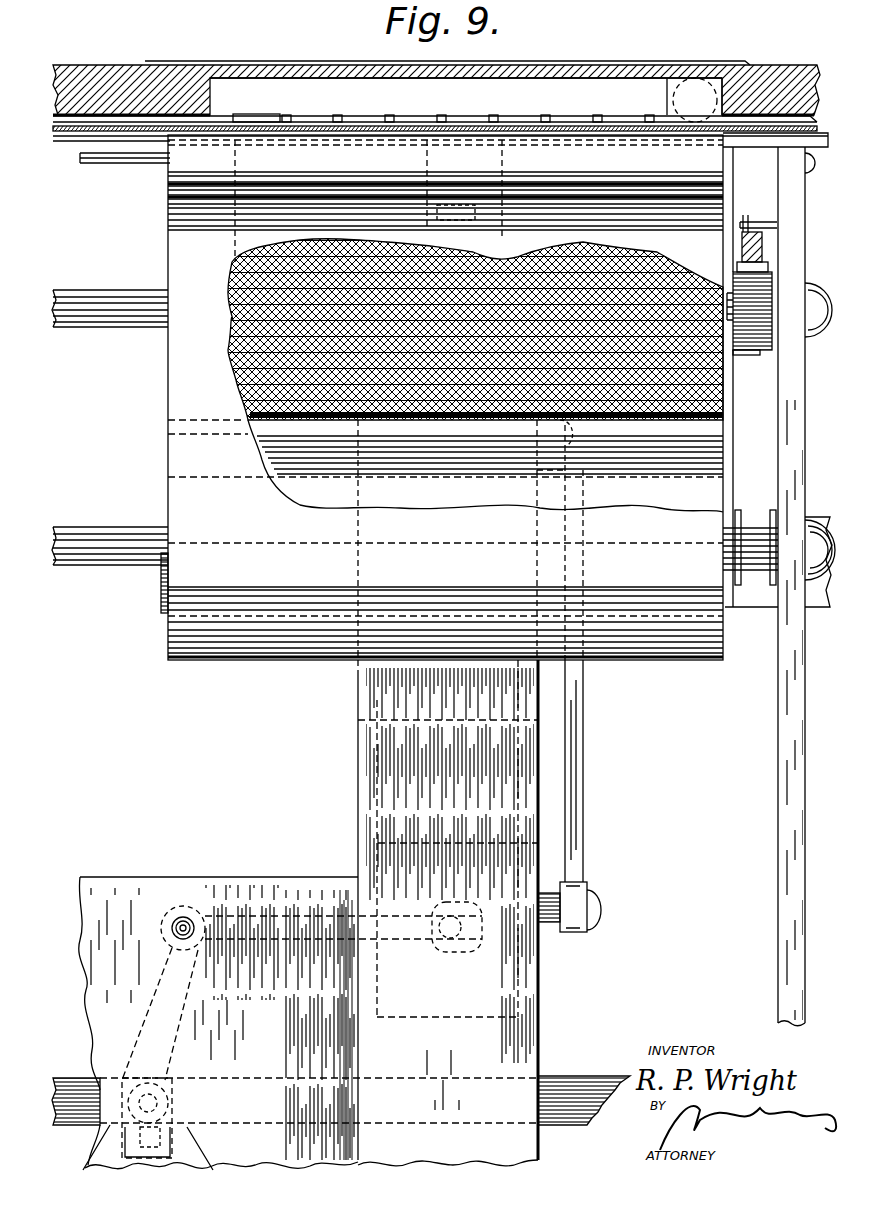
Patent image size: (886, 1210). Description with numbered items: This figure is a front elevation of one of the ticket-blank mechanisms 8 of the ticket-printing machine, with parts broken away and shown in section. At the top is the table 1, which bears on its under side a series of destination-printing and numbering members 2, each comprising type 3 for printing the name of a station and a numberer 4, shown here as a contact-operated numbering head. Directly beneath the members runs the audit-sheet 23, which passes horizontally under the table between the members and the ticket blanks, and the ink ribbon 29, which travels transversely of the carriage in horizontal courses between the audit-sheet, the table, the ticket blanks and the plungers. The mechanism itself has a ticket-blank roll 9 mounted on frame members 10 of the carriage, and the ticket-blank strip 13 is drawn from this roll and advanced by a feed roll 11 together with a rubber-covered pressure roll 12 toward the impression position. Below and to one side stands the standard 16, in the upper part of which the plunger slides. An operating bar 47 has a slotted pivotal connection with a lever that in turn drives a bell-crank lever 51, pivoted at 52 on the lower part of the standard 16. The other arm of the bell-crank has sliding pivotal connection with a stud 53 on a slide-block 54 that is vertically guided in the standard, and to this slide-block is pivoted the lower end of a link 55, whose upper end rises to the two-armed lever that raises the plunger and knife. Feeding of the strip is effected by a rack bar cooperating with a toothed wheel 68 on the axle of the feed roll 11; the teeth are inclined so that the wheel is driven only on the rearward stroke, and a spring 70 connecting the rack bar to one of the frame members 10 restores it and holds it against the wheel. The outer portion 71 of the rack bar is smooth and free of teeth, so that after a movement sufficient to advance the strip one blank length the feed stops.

The table 1 is at (126, 44).
The destination-printing and numbering members 2 is at (290, 90).
The type 3 is at (462, 120).
The numberer 4 is at (693, 122).
The audit-sheet 23 is at (522, 130).
The ink ribbon 29 is at (577, 122).
The ticket-blank strip 13 is at (177, 239).
The rubber-covered pressure roll 12 is at (657, 167).
The feed roll 11 is at (727, 412).
The outer portion of rack bar 71 is at (750, 268).
The spring 70 is at (762, 257).
The toothed wheel 68 is at (758, 298).
The ticket-blank roll 9 is at (168, 635).
The ticket-blank mechanism 8 is at (411, 910).
The frame members 10 is at (790, 709).
The link 55 is at (583, 770).
The slide-block 54 is at (510, 963).
The pivot 52 is at (183, 920).
The bell-crank lever 51 is at (250, 928).
The stud 53 is at (446, 950).
The standard 16 is at (540, 1018).
The operating bar 47 is at (587, 1051).